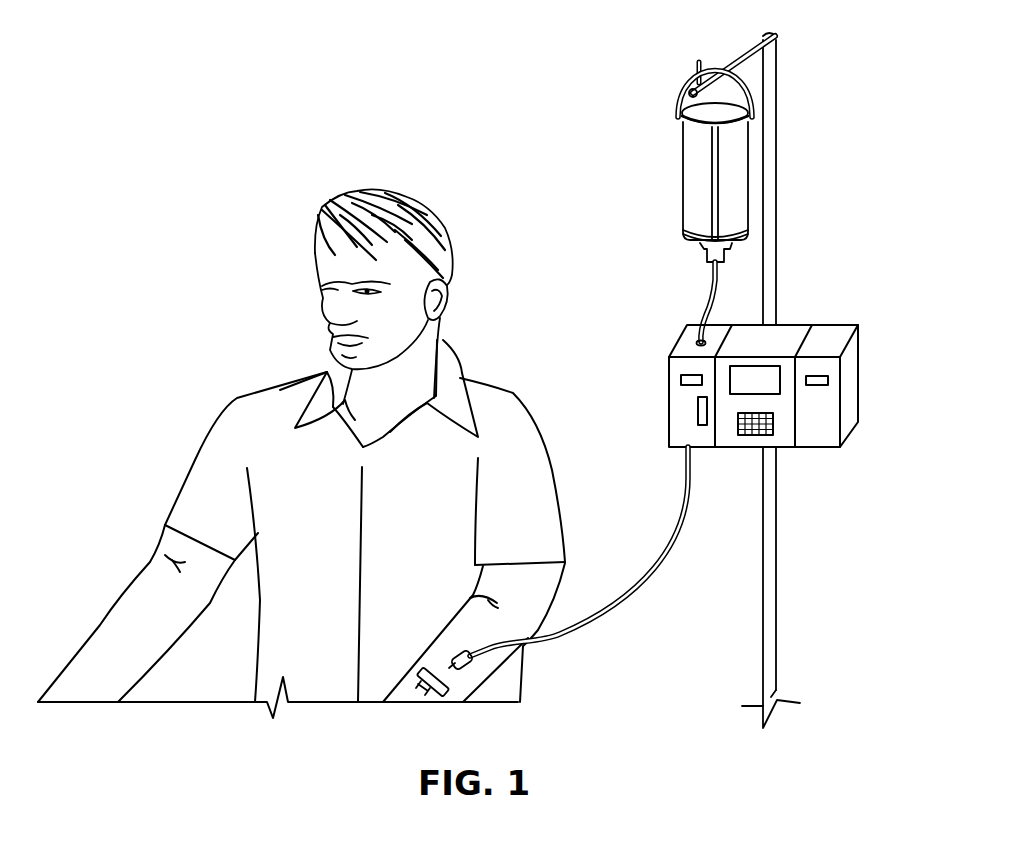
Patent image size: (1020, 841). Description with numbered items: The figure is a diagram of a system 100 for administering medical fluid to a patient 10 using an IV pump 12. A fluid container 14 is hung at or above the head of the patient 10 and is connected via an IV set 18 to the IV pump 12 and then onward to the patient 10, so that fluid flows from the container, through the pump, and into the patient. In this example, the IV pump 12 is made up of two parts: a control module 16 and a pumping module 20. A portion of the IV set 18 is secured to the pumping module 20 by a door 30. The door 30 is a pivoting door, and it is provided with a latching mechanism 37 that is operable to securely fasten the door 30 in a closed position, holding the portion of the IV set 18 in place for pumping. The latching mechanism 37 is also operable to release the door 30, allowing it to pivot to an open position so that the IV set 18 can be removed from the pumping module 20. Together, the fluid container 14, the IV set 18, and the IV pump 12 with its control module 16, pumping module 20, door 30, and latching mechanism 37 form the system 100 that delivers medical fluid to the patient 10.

The system 100 is at (631, 44).
The patient 10 is at (273, 206).
The IV pump 12 is at (848, 246).
The fluid container 14 is at (693, 183).
The control module 16 is at (788, 338).
The IV set 18 is at (690, 292).
The pumping module 20 is at (668, 374).
The door 30 is at (673, 436).
The latching mechanism 37 is at (700, 410).